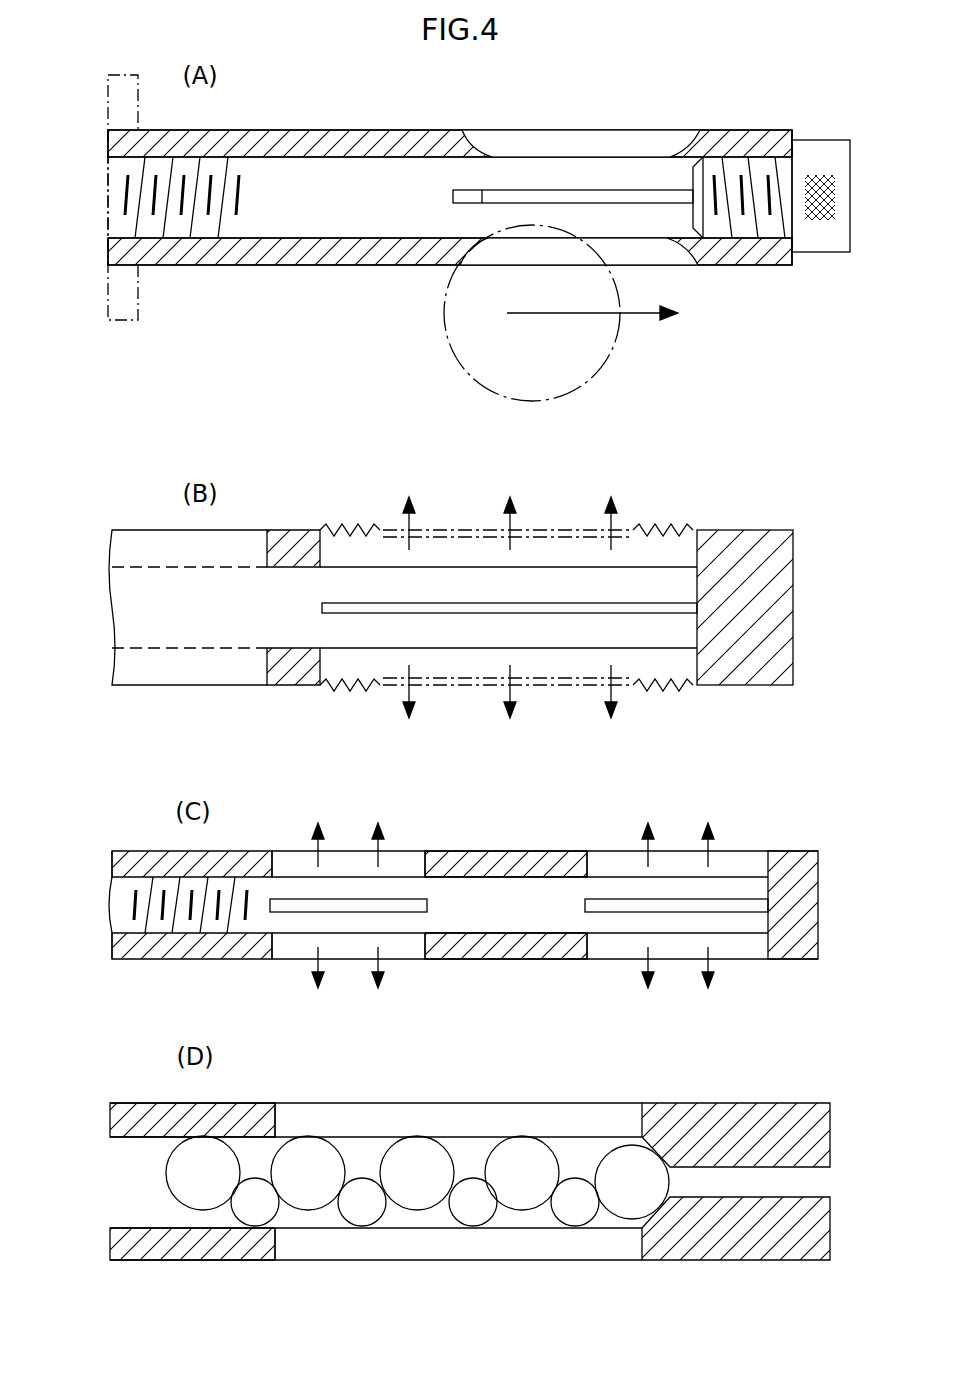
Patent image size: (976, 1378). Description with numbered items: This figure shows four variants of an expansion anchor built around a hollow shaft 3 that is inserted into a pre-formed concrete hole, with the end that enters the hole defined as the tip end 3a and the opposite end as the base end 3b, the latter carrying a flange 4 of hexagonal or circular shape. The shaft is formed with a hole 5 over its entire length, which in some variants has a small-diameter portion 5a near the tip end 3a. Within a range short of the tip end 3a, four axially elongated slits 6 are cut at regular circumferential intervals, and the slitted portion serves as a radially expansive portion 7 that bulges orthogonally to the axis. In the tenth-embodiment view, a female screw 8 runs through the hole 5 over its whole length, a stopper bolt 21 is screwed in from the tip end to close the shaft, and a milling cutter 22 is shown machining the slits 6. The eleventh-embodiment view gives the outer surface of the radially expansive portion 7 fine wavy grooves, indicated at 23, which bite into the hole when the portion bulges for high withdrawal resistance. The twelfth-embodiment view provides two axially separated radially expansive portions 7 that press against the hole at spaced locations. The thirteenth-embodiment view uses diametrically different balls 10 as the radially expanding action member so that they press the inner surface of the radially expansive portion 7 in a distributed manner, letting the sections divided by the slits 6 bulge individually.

The hollow shaft 3 is at (390, 145).
The tip end 3a is at (758, 260).
The base end 3b is at (120, 150).
The flange 4 is at (123, 320).
The hole 5 is at (422, 160).
The small-diameter portion 5a is at (795, 1185).
The slits 6 is at (555, 190).
The radially expansive portion 7 is at (627, 113).
The female screw 8 is at (153, 228).
The balls 10 is at (303, 1165).
The stopper bolt 21 is at (742, 190).
The milling cutter 22 is at (445, 300).
The membrane 23 is at (553, 528).